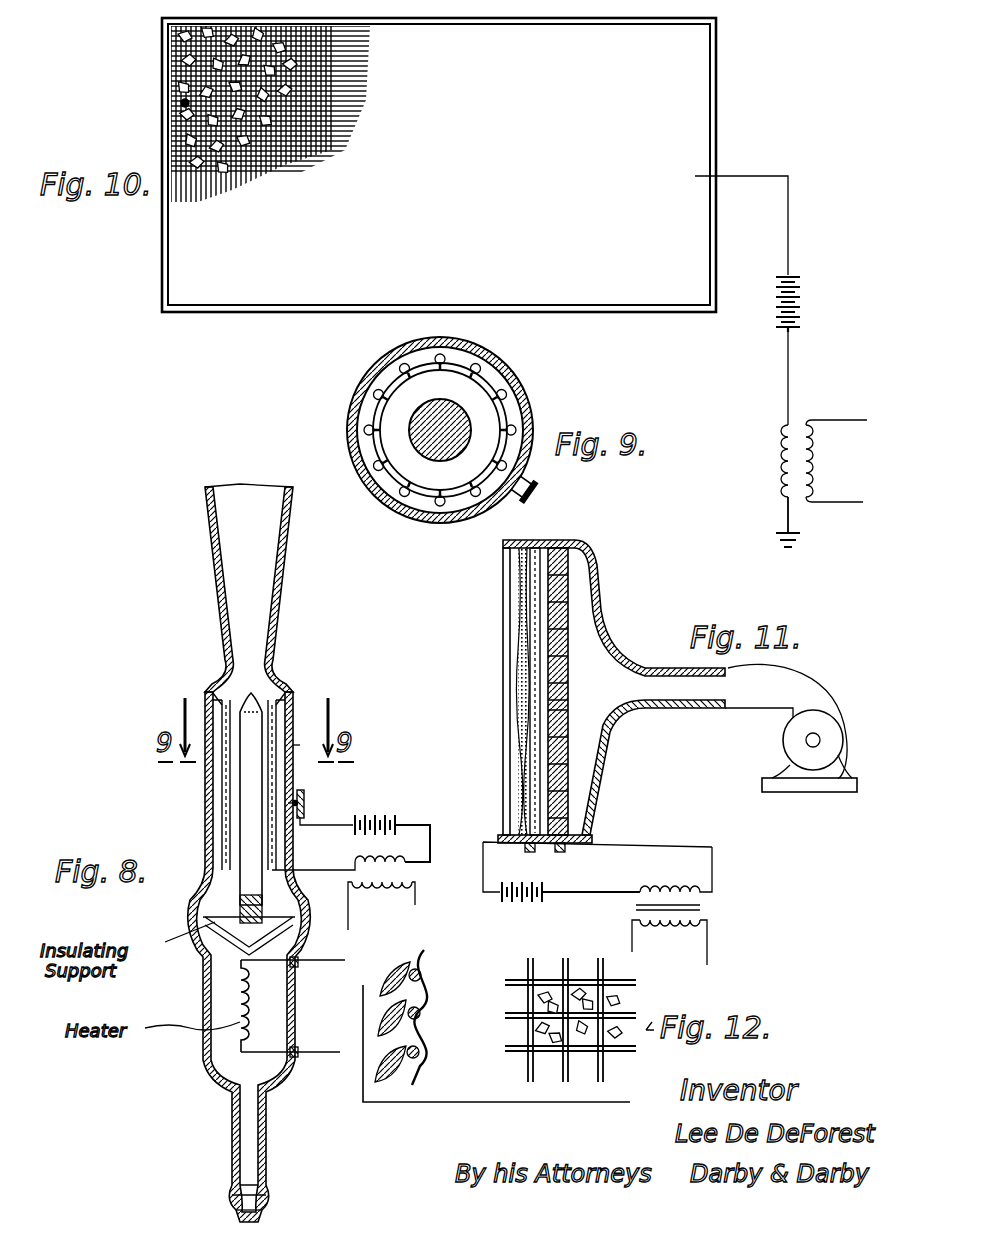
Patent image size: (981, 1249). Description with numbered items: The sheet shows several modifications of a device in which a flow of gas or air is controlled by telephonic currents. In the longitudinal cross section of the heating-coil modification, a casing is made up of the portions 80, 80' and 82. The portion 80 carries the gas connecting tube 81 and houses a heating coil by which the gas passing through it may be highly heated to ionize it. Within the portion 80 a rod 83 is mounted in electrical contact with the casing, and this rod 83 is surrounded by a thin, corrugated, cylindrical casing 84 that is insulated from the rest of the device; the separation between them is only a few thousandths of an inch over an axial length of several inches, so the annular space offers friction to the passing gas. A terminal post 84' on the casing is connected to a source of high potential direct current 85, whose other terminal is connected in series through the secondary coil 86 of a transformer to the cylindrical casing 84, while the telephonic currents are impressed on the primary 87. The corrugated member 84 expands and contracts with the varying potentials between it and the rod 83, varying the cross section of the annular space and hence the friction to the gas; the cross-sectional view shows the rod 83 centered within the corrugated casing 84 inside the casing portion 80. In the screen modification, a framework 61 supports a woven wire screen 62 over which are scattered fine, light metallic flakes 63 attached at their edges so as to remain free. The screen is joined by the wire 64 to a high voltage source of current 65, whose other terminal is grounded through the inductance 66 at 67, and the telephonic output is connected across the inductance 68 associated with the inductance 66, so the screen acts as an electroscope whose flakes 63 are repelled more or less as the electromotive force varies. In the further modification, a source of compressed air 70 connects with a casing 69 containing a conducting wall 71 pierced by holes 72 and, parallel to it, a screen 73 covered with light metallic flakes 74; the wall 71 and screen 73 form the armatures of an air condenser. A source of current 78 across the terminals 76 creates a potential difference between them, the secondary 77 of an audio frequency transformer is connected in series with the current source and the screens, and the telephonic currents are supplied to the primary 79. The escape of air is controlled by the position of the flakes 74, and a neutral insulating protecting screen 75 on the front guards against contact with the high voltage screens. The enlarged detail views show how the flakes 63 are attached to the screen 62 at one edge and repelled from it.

In FIG. 10, the framework 61 is at (160, 265).
In FIG. 10, the woven wire screen 62 is at (312, 151).
In FIG. 12, the woven wire screen 62 is at (428, 976).
In FIG. 10, the lumps of material 63 is at (182, 100).
In FIG. 12, the lumps of material 63 is at (400, 975).
In FIG. 10, the wire 64 is at (812, 224).
In FIG. 10, the high voltage source of current 65 is at (815, 298).
In FIG. 10, the inductance 66 is at (780, 480).
In FIG. 10, the ground 67 is at (800, 543).
In FIG. 10, the inductance 68 is at (826, 453).
In FIG. 11, the casing 69 is at (600, 573).
In FIG. 11, the source of compressed air 70 is at (790, 746).
In FIG. 11, the conducting wall 71 is at (577, 672).
In FIG. 11, the holes 72 is at (577, 695).
In FIG. 11, the screen 73 is at (535, 562).
In FIG. 11, the light metallic flakes 74 is at (517, 589).
In FIG. 11, the neutral insulating protecting screen 75 is at (503, 705).
In FIG. 11, the terminals 76 is at (565, 855).
In FIG. 11, the secondary 77 is at (668, 886).
In FIG. 11, the source of current 78 is at (522, 868).
In FIG. 11, the primary 79 is at (669, 942).
In FIG. 9, the casing portion 80 is at (417, 430).
In FIG. 8, the casing portion 80 is at (234, 957).
In FIG. 8, the casing portion 80' is at (309, 743).
In FIG. 8, the gas connecting tube 81 is at (270, 1183).
In FIG. 8, the casing portion 82 is at (297, 513).
In FIG. 9, the rod 83 is at (405, 428).
In FIG. 8, the rod 83 is at (240, 688).
In FIG. 9, the corrugated cylindrical casing 84 is at (481, 430).
In FIG. 8, the corrugated cylindrical casing 84 is at (215, 781).
In FIG. 8, the terminal post 84' is at (321, 795).
In FIG. 8, the source of high potential direct current 85 is at (385, 816).
In FIG. 8, the secondary coil 86 is at (352, 860).
In FIG. 8, the primary 87 is at (395, 896).